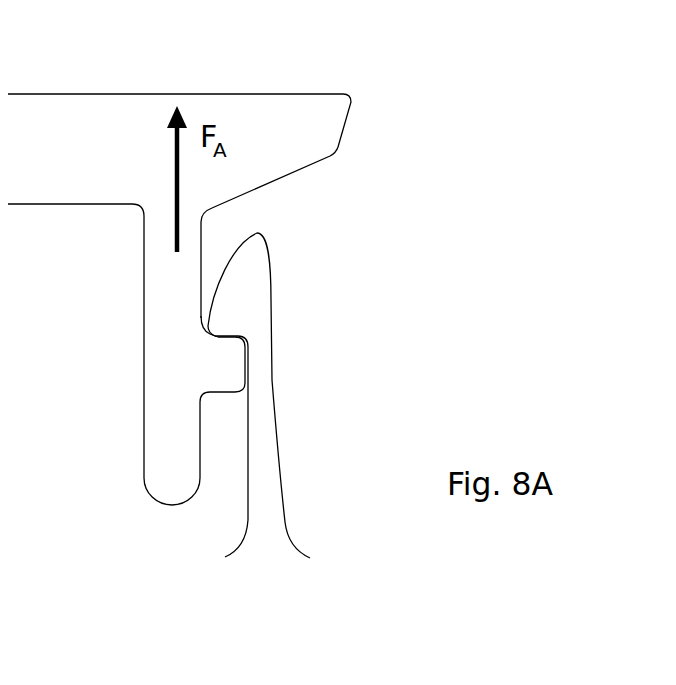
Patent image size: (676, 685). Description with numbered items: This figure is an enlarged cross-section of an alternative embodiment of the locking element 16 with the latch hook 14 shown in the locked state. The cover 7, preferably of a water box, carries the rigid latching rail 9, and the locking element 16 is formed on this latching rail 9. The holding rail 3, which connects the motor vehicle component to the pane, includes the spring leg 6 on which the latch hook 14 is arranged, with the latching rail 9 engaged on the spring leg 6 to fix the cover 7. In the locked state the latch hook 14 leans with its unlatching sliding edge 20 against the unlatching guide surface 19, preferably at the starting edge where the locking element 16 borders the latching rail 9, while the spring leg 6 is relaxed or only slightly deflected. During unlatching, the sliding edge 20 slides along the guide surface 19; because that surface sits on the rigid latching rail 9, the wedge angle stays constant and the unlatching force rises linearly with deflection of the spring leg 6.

The cover 7 is at (90, 108).
The latching rail 9 is at (175, 448).
The unlatching sliding edge 20 is at (216, 326).
The unlatching guide surface 19 is at (214, 345).
The locking element 16 is at (217, 374).
The latch hook 14 is at (248, 260).
The spring leg 6 is at (267, 468).
The holding rail 3 is at (272, 549).